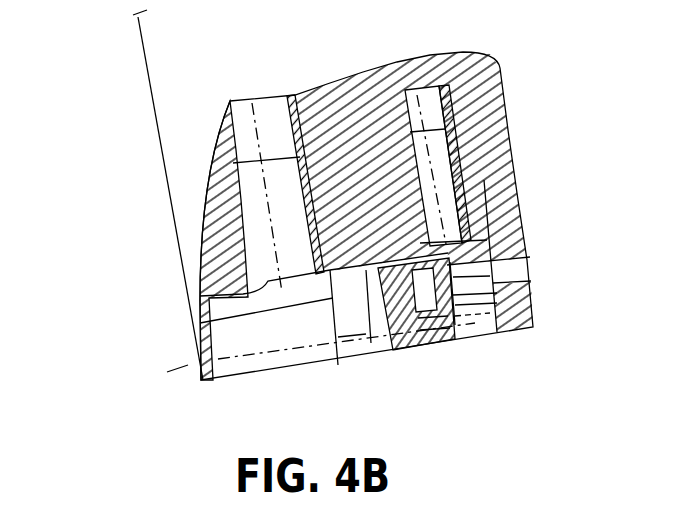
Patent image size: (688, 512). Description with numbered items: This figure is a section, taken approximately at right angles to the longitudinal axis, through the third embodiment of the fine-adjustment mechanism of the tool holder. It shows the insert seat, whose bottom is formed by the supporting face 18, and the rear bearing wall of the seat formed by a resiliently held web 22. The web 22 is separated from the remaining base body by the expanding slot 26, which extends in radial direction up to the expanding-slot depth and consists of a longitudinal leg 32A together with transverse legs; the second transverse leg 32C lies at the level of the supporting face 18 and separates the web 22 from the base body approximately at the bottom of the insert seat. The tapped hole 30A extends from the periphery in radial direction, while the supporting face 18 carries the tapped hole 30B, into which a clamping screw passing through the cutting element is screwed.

The supporting face 18 is at (200, 297).
The web 22 is at (398, 334).
The expanding slot 26 is at (525, 281).
The tapped hole 30A is at (447, 132).
The tapped hole 30B is at (250, 190).
The longitudinal leg 32A is at (527, 259).
The second transverse leg 32C is at (466, 203).